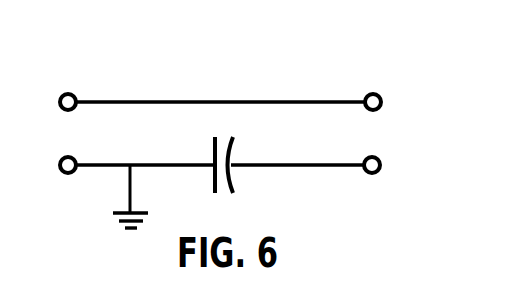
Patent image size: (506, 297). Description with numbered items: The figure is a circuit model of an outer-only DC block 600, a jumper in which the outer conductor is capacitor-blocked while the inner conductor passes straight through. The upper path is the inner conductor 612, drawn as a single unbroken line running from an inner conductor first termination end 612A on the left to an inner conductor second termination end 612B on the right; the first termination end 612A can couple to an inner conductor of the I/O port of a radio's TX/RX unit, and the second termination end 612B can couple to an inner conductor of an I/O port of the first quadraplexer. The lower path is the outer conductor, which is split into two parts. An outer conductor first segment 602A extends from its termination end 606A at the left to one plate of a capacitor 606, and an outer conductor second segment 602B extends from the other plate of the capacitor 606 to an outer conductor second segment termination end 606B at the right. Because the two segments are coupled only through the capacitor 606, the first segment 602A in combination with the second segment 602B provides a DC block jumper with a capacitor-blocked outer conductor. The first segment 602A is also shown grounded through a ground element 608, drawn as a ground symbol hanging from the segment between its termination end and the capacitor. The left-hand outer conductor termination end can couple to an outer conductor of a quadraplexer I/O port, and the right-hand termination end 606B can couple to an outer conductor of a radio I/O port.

The outer-only DC block 600 is at (334, 59).
The first wire 612 is at (257, 101).
The inner conductor first termination end 612A is at (75, 96).
The inner conductor second termination end 612B is at (380, 96).
The second wire terminal 606A is at (61, 171).
The outer conductor second segment termination end 606B is at (379, 159).
The outer conductor first segment 602A is at (113, 164).
The outer conductor second segment 602B is at (255, 164).
The capacitor 606 is at (248, 194).
The ground element 608 is at (132, 202).